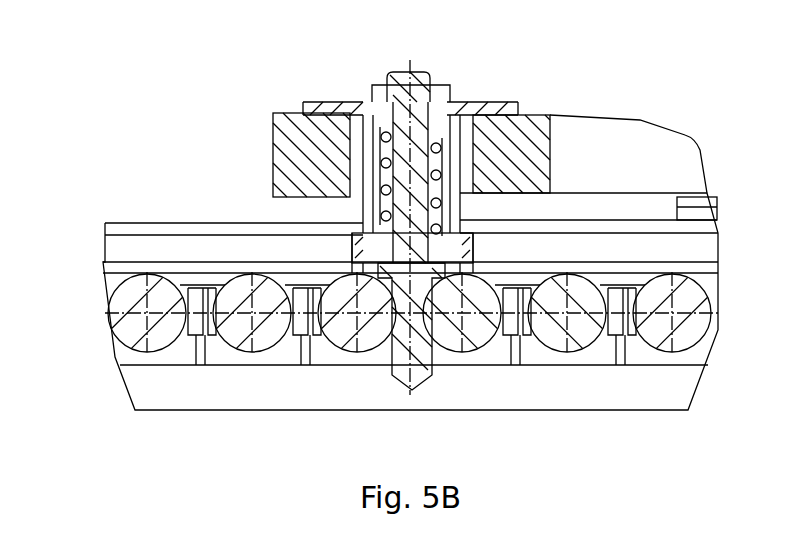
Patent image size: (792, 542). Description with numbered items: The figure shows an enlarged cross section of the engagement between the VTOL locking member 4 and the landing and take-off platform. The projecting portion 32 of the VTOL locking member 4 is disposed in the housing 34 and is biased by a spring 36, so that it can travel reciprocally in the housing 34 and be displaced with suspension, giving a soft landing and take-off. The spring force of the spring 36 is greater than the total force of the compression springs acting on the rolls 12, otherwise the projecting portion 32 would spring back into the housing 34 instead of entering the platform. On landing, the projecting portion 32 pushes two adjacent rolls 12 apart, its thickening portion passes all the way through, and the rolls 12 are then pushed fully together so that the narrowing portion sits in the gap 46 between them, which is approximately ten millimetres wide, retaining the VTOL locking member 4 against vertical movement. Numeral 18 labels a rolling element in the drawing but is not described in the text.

The VTOL locking member 4 is at (418, 55).
The rolls 12 is at (342, 335).
The rolling element 18 is at (242, 357).
The projecting portion 32 is at (407, 330).
The housing 34 is at (365, 128).
The spring 36 is at (437, 123).
The gap 46 is at (505, 290).